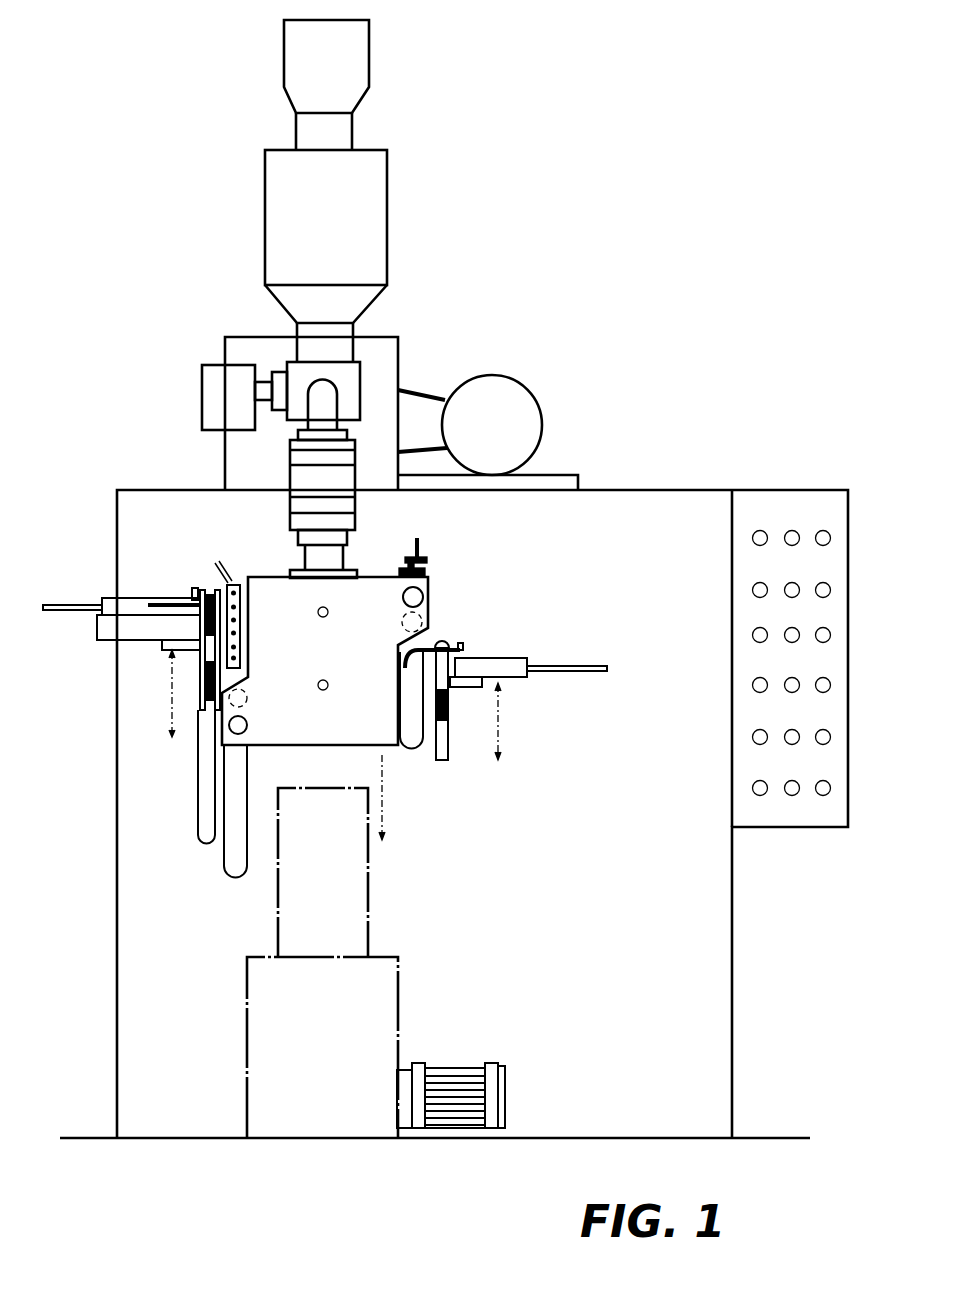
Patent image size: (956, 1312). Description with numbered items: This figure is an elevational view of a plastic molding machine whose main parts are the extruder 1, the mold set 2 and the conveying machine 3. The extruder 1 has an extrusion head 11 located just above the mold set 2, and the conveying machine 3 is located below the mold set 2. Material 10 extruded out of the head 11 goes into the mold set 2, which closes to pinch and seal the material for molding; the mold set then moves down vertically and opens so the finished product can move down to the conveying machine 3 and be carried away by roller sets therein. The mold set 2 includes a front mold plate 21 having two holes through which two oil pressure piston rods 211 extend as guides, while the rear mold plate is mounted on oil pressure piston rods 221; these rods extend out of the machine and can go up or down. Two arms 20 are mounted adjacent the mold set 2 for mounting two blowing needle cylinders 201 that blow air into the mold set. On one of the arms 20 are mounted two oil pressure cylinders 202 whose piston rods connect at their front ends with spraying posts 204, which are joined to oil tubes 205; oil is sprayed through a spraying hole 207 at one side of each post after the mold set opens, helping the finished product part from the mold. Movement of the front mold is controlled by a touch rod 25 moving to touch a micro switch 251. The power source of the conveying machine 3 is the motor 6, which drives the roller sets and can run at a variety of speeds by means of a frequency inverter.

The extruder 1 is at (655, 490).
The mold set 2 is at (303, 572).
The conveying machine 3 is at (278, 912).
The motor 6 is at (490, 1068).
The material 10 is at (318, 548).
The extrusion head 11 is at (347, 492).
The arms 20 is at (207, 710).
The front mold plate 21 is at (265, 593).
The touch rod 25 is at (430, 568).
The blowing needle cylinders 201 is at (118, 605).
The oil pressure cylinders 202 is at (118, 636).
The spraying posts 204 is at (245, 638).
The oil tubes 205 is at (218, 576).
The spraying hole 207 is at (240, 655).
The oil pressure piston rods 211 is at (246, 728).
The oil pressure piston rods 221 is at (250, 700).
The micro switch 251 is at (420, 555).